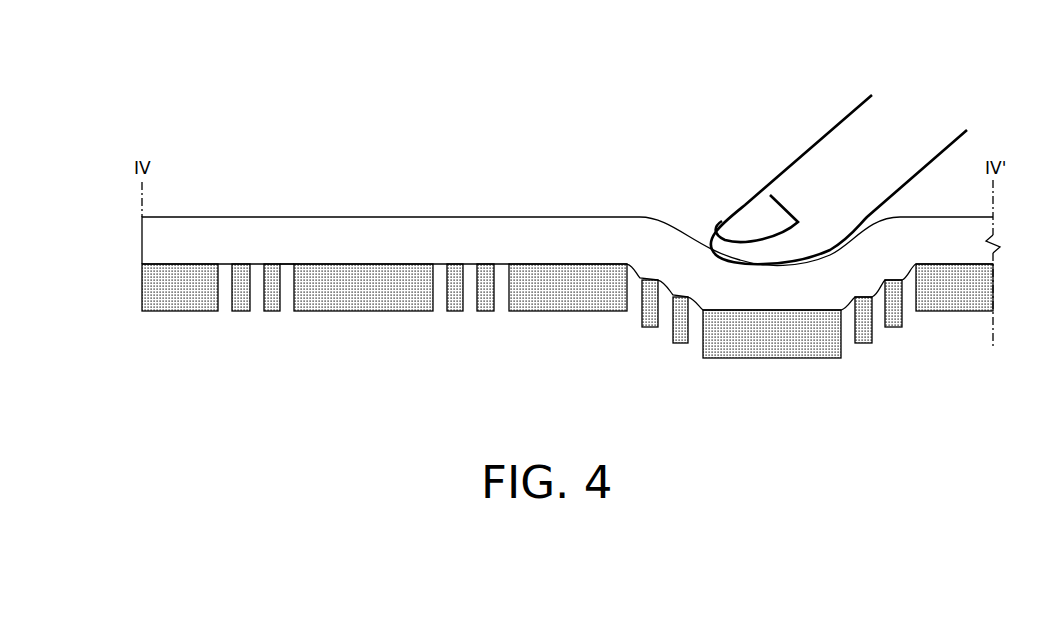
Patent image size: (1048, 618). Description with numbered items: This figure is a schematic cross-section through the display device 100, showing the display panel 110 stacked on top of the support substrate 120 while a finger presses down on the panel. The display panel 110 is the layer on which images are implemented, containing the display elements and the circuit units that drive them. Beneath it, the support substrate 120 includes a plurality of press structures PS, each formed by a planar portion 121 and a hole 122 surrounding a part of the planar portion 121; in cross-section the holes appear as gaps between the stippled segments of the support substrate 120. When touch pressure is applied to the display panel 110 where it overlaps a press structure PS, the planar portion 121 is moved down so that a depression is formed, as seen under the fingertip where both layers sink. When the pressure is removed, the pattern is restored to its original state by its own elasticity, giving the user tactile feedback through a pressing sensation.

The display device 100 is at (987, 46).
The display panel 110 is at (162, 240).
The support substrate 120 is at (160, 290).
The planar portion 121 is at (357, 287).
The hole 122 is at (290, 287).
The press structure PS is at (369, 153).